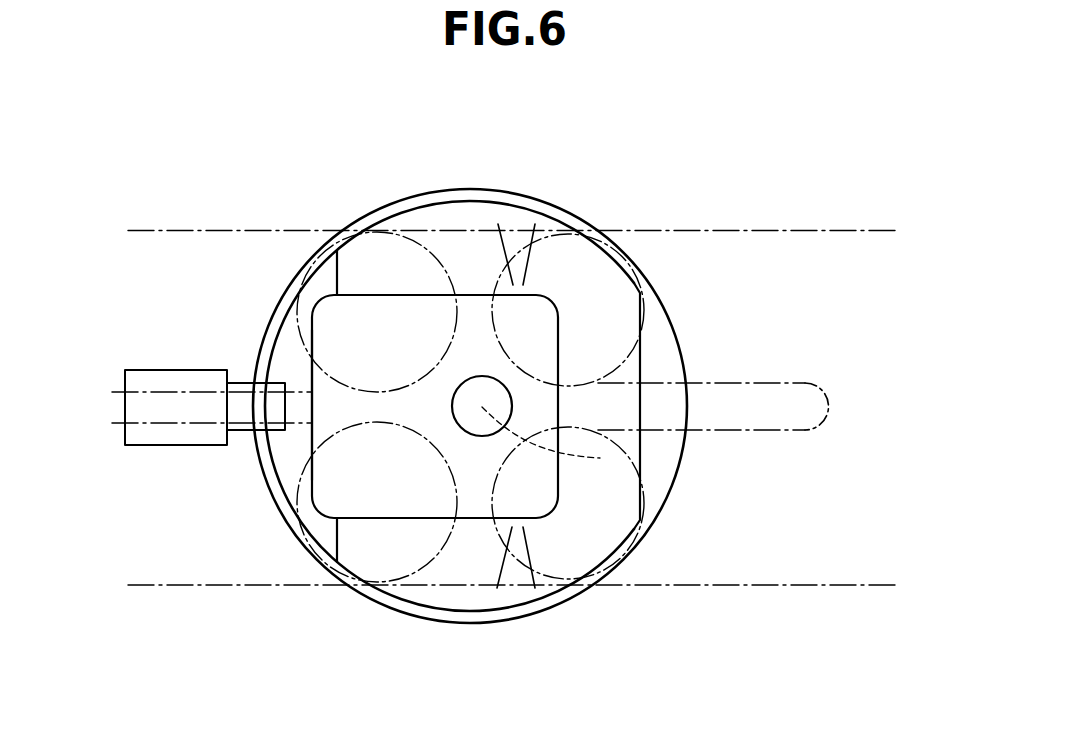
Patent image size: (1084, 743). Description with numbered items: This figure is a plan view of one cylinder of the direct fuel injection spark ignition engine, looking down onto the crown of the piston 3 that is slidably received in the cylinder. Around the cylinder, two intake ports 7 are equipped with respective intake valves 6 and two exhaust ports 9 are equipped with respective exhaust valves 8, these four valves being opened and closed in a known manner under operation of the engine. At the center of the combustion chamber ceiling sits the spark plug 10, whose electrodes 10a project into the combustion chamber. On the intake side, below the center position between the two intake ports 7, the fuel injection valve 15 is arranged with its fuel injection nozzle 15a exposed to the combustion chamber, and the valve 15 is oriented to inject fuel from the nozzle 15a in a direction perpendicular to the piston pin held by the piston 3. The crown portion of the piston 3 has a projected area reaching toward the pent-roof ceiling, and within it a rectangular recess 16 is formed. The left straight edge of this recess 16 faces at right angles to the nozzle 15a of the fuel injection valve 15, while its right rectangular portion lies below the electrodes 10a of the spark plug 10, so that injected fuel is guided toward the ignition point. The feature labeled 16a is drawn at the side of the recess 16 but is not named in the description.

The piston 3 is at (525, 608).
The intake valve 6 is at (398, 253).
The intake port 7 is at (166, 260).
The exhaust valve 8 is at (553, 262).
The exhaust port 9 is at (832, 243).
The spark plug 10 is at (498, 408).
The electrodes 10a is at (600, 458).
The fuel injection valve 15 is at (242, 402).
The fuel injection nozzle 15a is at (285, 407).
The rectangular recess 16 is at (447, 518).
The carrier block side face 16a is at (317, 433).